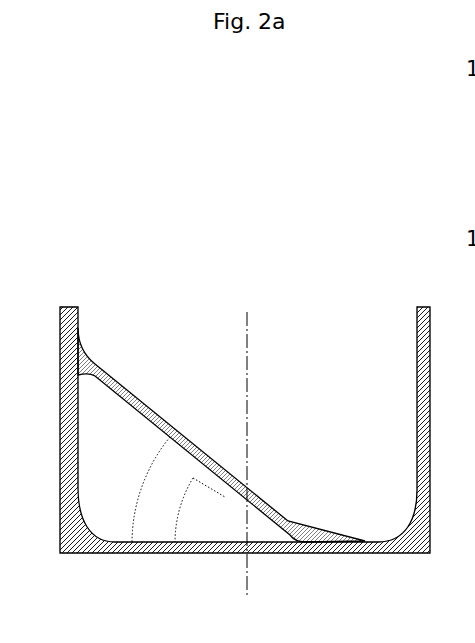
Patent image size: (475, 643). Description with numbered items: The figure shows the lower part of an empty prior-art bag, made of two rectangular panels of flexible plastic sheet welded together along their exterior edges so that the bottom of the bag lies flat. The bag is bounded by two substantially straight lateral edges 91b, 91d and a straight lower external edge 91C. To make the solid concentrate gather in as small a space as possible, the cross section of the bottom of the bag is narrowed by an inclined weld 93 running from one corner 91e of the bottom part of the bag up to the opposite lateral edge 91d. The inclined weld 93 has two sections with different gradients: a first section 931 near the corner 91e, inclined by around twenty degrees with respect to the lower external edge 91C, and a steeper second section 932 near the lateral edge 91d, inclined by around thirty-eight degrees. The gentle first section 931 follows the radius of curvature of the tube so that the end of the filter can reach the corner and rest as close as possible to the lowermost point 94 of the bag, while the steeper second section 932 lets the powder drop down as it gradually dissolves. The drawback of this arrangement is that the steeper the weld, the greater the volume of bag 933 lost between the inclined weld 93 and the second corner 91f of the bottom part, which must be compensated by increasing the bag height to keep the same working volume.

The lateral edge 91d is at (67, 307).
The lateral edge 91b is at (417, 308).
The lower external edge 91C is at (342, 543).
The corner of the bottom part of the bag 91e is at (410, 537).
The second corner of the bottom part of the bag 91f is at (62, 553).
The inclined weld 93 is at (186, 437).
The first section of the inclined weld 931 is at (287, 519).
The second section of the inclined weld 932 is at (147, 406).
The lost volume of bag 933 is at (167, 490).
The lowermost point 94 is at (375, 541).